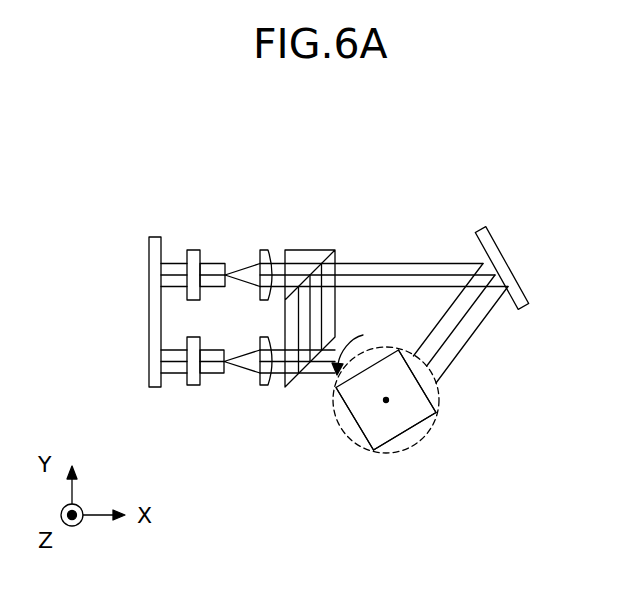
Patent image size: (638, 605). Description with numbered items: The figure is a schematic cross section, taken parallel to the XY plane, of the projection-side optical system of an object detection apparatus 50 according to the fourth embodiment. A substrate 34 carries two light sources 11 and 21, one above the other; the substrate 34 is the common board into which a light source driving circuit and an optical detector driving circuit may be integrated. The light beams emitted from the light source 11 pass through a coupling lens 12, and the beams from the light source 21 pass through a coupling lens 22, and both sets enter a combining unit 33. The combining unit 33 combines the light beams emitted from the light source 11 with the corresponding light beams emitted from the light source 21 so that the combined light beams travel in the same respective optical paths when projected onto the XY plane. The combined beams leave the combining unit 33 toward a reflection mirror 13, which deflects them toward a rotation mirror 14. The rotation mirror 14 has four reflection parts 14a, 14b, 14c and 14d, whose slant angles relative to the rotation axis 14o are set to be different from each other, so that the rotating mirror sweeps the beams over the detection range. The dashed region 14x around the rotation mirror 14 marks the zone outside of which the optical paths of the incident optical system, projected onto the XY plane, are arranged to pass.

The object detection apparatus 50 is at (104, 160).
The substrate 34 is at (153, 237).
The light source 11 is at (192, 250).
The coupling lens 12 is at (265, 250).
The combining unit 33 is at (313, 250).
The reflection mirror 13 is at (479, 231).
The light source 21 is at (194, 387).
The coupling lens 22 is at (266, 386).
The rotation mirror 14 is at (375, 451).
The reflection part 14a is at (438, 413).
The reflection part 14b is at (370, 365).
The reflection part 14c is at (357, 433).
The reflection part 14d is at (416, 428).
The rotation axis 14o is at (386, 400).
The region 14x is at (404, 452).